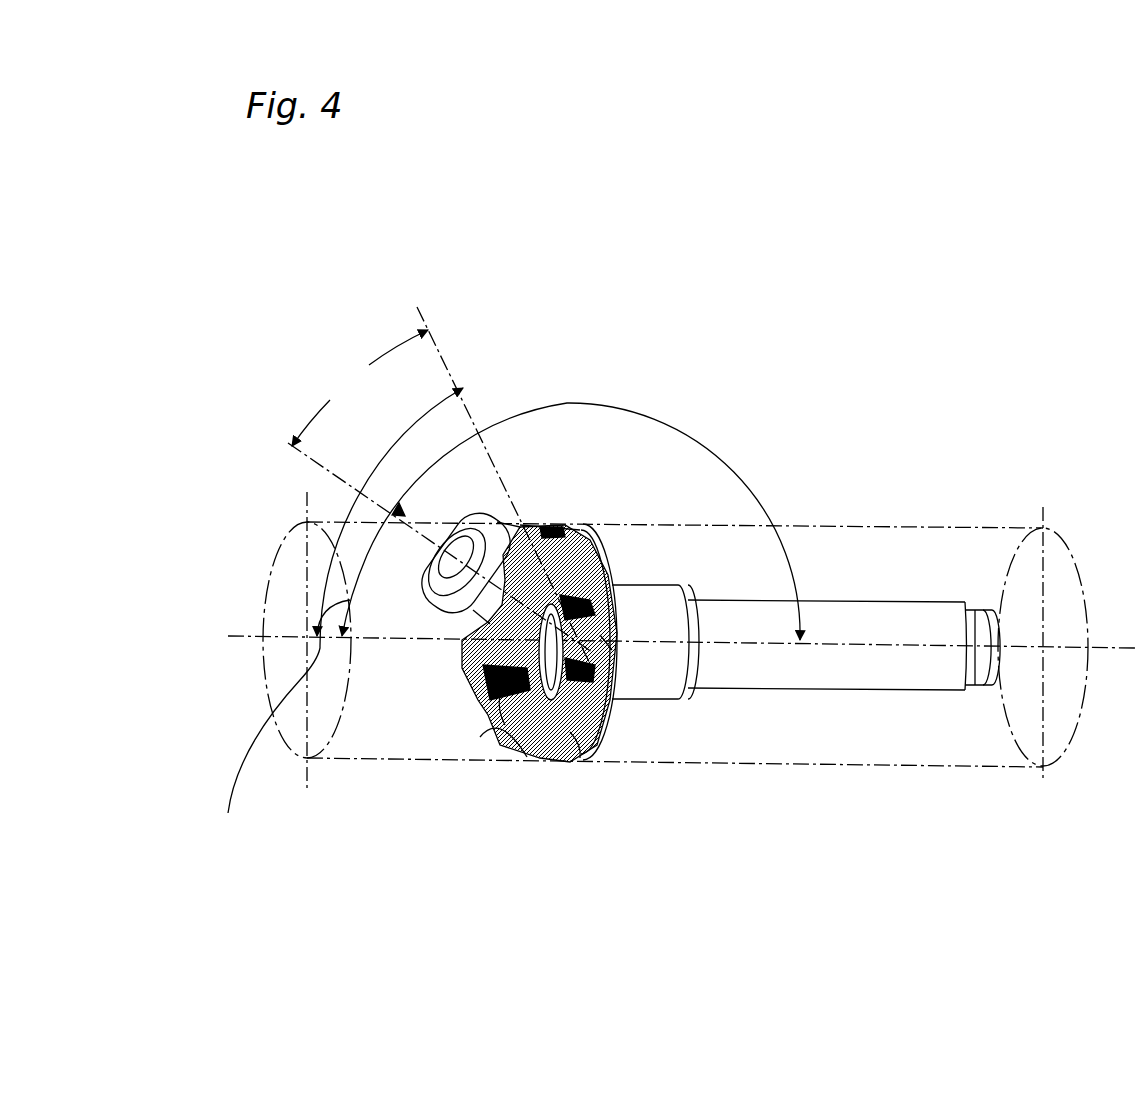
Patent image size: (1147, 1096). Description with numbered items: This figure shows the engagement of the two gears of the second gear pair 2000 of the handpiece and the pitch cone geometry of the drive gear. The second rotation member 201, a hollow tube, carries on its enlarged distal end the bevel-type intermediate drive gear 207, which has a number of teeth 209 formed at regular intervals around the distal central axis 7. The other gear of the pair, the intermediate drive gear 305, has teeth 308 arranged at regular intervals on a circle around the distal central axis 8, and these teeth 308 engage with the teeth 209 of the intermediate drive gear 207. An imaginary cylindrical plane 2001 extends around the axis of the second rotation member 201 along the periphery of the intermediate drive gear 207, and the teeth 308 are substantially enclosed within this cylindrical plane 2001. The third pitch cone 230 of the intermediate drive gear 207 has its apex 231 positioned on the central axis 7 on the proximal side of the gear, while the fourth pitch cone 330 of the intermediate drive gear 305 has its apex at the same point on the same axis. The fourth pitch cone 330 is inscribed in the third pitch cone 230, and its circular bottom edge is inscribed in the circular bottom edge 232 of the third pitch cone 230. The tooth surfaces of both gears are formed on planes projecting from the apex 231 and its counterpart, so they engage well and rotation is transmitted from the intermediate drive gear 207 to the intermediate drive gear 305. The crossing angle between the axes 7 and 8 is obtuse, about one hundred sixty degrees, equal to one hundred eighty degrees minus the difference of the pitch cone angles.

The second gear pair 2000 is at (632, 306).
The cylindrical plane 2001 is at (978, 525).
The distal central axis 7 is at (1108, 647).
The second rotation member 201 is at (741, 604).
The intermediate drive gear 207 is at (600, 570).
The third pitch cone 230 is at (583, 680).
The teeth 209 is at (584, 740).
The circular bottom edge 232 is at (505, 697).
The apex 231 is at (608, 642).
The intermediate drive gear 305 is at (546, 525).
The distal central axis 8 is at (416, 522).
The fourth pitch cone 330 is at (460, 613).
The teeth 308 is at (466, 632).